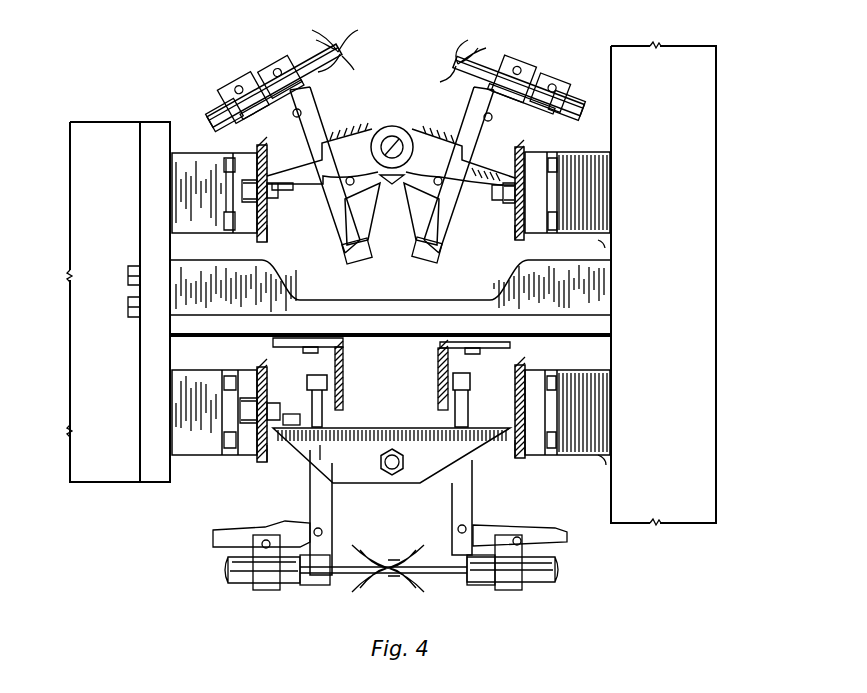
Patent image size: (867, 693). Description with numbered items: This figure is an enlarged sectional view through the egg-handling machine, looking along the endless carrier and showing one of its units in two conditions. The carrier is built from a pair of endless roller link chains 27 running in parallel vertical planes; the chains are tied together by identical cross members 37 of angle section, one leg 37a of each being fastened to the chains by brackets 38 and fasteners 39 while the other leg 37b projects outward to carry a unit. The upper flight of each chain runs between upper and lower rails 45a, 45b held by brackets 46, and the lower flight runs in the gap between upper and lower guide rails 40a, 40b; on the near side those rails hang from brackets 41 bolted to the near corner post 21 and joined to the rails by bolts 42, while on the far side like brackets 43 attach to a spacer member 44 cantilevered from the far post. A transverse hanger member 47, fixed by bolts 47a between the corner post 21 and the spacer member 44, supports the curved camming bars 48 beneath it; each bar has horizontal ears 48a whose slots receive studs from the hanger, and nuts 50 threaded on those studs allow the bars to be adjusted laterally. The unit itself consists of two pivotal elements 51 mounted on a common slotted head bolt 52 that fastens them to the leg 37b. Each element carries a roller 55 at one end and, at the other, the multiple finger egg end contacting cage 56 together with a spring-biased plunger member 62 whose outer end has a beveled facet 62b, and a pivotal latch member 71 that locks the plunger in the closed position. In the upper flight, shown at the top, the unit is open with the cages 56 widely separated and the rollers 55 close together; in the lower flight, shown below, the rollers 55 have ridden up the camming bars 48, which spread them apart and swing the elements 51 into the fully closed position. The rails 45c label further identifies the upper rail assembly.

The near corner post 21 is at (611, 68).
The endless roller link chain 27 is at (278, 196).
The cross member 37 is at (385, 181).
The leg of cross member 37a is at (406, 428).
The outwardly projecting leg of cross member 37b is at (432, 130).
The bracket 38 is at (320, 430).
The fastener 39 is at (291, 417).
The upper guide rail 40a is at (260, 368).
The lower guide rail 40b is at (266, 462).
The bracket 41 is at (606, 245).
The bolt 42 is at (558, 384).
The bracket 43 is at (212, 450).
The spacer member 44 is at (103, 482).
The upper rail 45a is at (515, 152).
The lower rail 45b is at (267, 233).
The mounting plate 45c is at (267, 148).
The bracket 46 is at (203, 235).
The hanger member 47 is at (273, 283).
The bolt 47a is at (130, 303).
The curved camming bar 48 is at (429, 358).
The horizontal ear 48a is at (292, 342).
The nut 50 is at (300, 351).
The pivotal element 51 is at (318, 109).
The slotted head bolt 52 is at (392, 140).
The roller 55 is at (414, 249).
The multiple finger egg end contacting cage 56 is at (321, 42).
The plunger member 62 is at (241, 592).
The beveled facet 62b is at (230, 575).
The pivotal latch member 71 is at (236, 530).